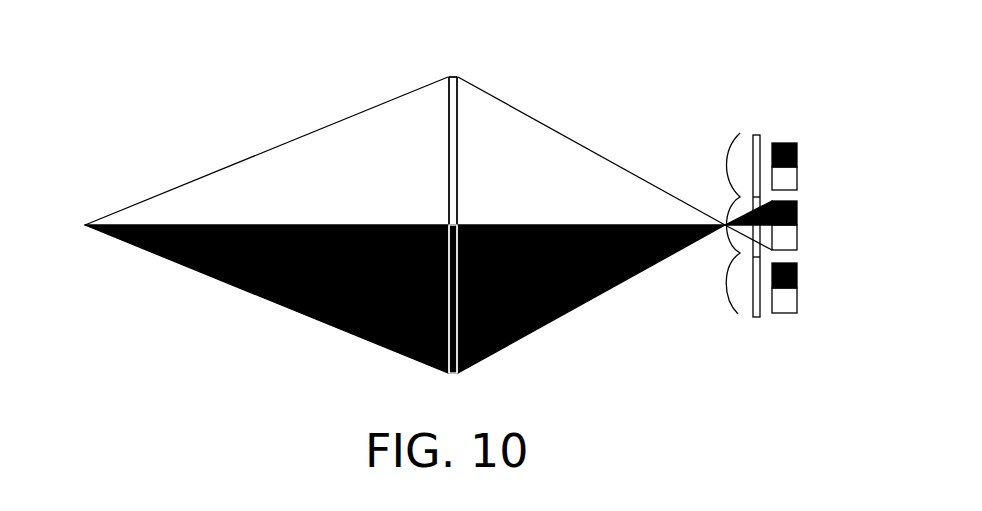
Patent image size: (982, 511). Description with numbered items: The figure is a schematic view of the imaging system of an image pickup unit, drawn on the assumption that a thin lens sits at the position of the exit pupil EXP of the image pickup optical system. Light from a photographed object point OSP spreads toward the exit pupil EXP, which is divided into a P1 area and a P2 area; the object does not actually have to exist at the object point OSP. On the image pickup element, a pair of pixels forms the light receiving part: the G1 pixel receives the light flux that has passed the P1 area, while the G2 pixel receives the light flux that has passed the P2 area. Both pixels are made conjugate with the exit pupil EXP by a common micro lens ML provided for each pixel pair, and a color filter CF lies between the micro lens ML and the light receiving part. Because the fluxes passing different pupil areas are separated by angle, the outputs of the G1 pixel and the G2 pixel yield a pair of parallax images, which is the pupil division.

The object point OSP is at (85, 225).
The exit pupil EXP is at (457, 77).
The P1 area P1 is at (449, 277).
The P2 area P2 is at (449, 148).
The micro lens ML is at (739, 137).
The color filter CF is at (757, 135).
The G1 pixel G1 is at (797, 213).
The G2 pixel G2 is at (797, 239).